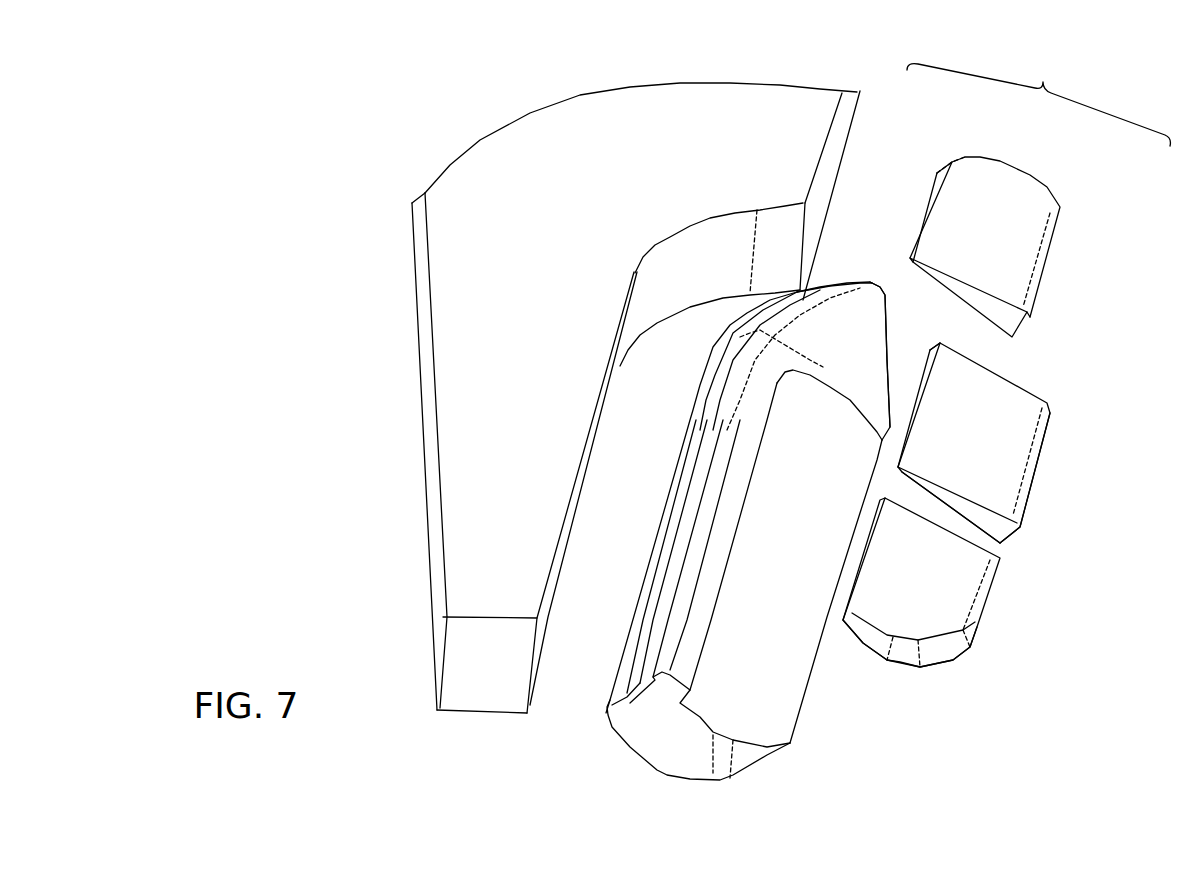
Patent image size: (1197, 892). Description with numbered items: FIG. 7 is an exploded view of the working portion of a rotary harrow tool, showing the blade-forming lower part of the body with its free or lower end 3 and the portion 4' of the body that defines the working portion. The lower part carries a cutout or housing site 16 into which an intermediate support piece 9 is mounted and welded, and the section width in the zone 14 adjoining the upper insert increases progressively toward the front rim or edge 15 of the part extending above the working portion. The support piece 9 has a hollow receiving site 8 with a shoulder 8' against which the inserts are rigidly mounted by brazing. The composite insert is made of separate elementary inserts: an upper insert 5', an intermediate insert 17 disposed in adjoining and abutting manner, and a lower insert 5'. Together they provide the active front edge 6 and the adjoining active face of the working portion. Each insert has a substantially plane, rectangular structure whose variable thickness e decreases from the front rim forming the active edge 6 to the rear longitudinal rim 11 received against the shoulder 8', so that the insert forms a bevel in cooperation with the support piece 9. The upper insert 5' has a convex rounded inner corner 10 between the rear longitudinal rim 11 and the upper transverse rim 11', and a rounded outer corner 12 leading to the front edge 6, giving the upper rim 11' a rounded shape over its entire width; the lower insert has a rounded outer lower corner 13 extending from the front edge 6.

The free or lower end 3 is at (462, 730).
The portion of body 4' is at (485, 453).
The upper insert 5' is at (1040, 232).
The active front edge 6 is at (1043, 528).
The receiving site 8 is at (748, 527).
The shoulder 8' is at (575, 350).
The intermediate support piece 9 is at (673, 792).
The rounded inner corner 10 is at (938, 138).
The rear longitudinal rim 11 is at (913, 380).
The upper transverse rim 11' is at (1038, 92).
The rounded outer corner 12 is at (1084, 187).
The rounded outer lower corner 13 is at (969, 679).
The zone adjoining upper insert 14 is at (904, 335).
The front rim or edge 15 is at (842, 110).
The housing site 16 is at (672, 267).
The intermediate insert 17 is at (1007, 453).
The variable thickness e is at (935, 523).